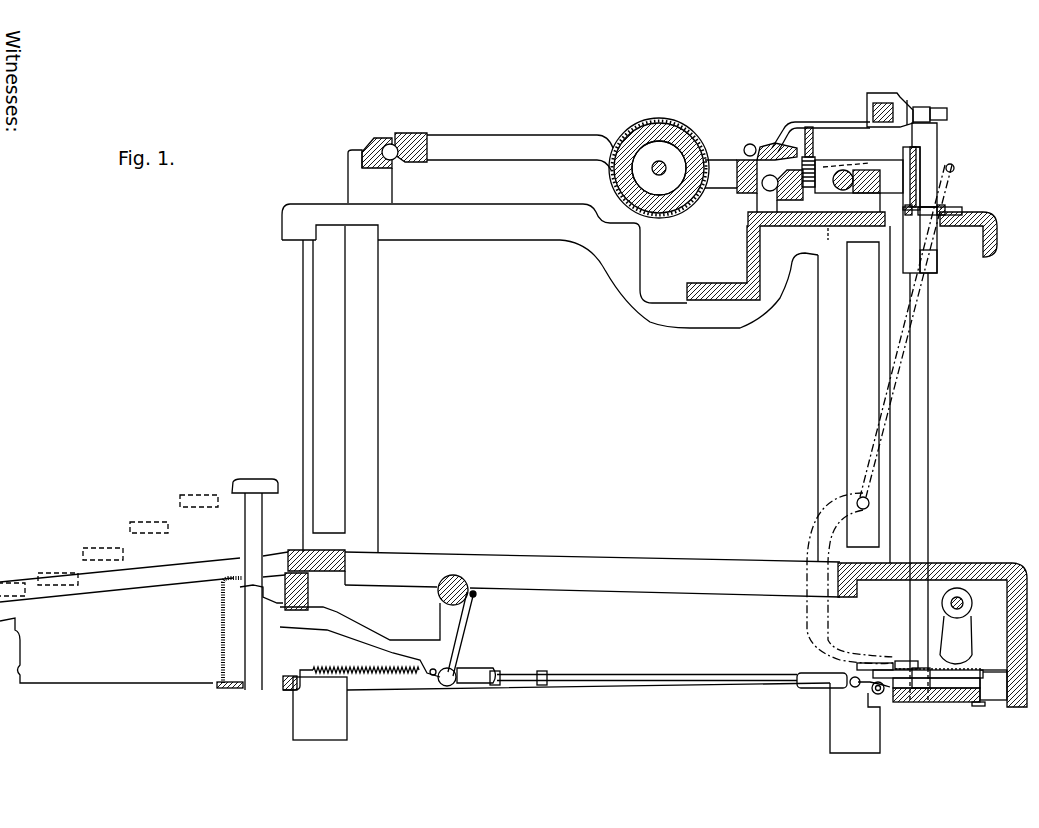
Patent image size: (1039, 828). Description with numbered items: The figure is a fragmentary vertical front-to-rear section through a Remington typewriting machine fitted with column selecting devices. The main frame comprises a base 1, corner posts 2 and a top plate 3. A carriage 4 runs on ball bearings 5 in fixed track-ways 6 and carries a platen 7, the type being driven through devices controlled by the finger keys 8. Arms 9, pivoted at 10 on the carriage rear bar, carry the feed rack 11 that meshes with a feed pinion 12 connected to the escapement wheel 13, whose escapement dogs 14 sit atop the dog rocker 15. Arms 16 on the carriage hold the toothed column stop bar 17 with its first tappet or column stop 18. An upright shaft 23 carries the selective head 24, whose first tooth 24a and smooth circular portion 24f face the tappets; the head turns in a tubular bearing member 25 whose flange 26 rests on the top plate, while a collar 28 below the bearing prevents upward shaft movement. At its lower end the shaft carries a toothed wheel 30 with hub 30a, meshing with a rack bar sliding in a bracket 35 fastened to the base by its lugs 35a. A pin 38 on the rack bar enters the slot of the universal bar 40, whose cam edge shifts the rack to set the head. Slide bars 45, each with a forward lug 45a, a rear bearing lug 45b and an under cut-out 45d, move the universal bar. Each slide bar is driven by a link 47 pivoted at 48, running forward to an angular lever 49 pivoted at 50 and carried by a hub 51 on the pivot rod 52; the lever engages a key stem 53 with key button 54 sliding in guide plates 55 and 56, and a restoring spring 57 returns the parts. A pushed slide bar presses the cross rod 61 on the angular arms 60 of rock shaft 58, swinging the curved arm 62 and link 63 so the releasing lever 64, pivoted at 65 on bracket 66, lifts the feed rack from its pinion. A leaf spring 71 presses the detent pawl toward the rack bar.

The base 1 is at (578, 561).
The corner posts 2 is at (806, 394).
The top plate 3 is at (521, 207).
The carriage 4 is at (517, 138).
The ball bearings 5 is at (763, 188).
The track-ways 6 is at (785, 226).
The platen 7 is at (667, 122).
The finger keys 8 is at (180, 500).
The arms 9 is at (765, 147).
The pivot 10 is at (744, 150).
The feed rack 11 is at (820, 135).
The feed pinion 12 is at (817, 160).
The escapement wheel 13 is at (920, 152).
The escapement dogs 14 is at (941, 210).
The dog rocker 15 is at (903, 268).
The arms 16 is at (808, 121).
The column stop bar 17 is at (873, 110).
The column stop 18 is at (885, 93).
The shaft 23 is at (920, 527).
The selective head 24 is at (932, 103).
The tooth 24a is at (945, 117).
The circular portion 24f is at (915, 108).
The tubular bearing member 25 is at (938, 135).
The flange 26 is at (962, 210).
The collar 28 is at (937, 271).
The toothed wheel 30 is at (915, 703).
The hub 30a is at (905, 661).
The bracket 35 is at (967, 704).
The lugs 35a is at (1003, 700).
The pin 38 is at (937, 690).
The universal bar 40 is at (996, 685).
The slide bars 45 is at (955, 703).
The lug 45a is at (872, 666).
The bearing lug 45b is at (985, 706).
The cut-outs 45d is at (868, 708).
The link 47 is at (650, 674).
The pivot 48 is at (854, 688).
The angular lever 49 is at (461, 635).
The pivot 50 is at (448, 687).
The hub 51 is at (441, 600).
The pivot rod 52 is at (475, 595).
The key stem 53 is at (263, 508).
The key button 54 is at (253, 479).
The guide plate 55 is at (222, 602).
The guide plate 56 is at (233, 689).
The restoring spring 57 is at (337, 667).
The rock shaft 58 is at (971, 602).
The angular arms 60 is at (966, 629).
The cross rod 61 is at (881, 694).
The curved arm 62 is at (805, 610).
The link 63 is at (910, 353).
The releasing lever 64 is at (877, 152).
The pivot 65 is at (836, 191).
The bracket 66 is at (836, 243).
The leaf spring 71 is at (953, 664).